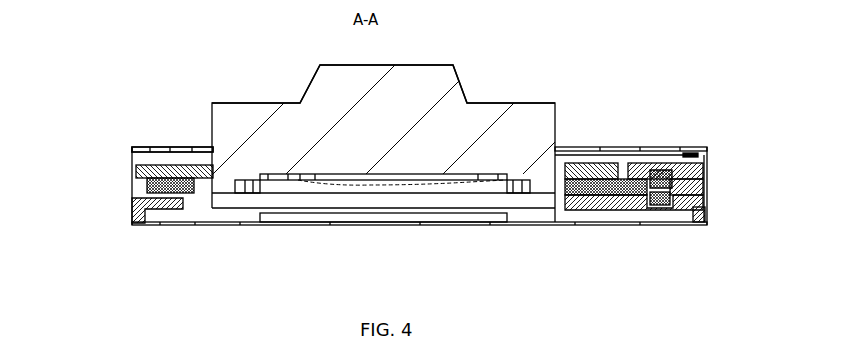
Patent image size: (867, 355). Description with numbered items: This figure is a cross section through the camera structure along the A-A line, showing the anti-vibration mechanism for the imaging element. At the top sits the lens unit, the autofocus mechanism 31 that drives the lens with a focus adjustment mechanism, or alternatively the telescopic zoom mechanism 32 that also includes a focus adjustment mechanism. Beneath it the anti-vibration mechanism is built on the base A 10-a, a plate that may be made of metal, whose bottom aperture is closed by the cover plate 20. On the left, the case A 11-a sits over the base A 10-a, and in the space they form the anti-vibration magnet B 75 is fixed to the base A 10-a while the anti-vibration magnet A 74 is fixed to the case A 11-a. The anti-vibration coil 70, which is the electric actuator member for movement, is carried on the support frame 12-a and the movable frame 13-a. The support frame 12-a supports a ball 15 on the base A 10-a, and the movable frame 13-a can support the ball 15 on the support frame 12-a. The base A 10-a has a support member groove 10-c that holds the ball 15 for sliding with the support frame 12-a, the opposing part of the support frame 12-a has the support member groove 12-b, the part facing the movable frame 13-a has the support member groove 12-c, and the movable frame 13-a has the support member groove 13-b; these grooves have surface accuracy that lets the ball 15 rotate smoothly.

The movable frame 13-a is at (130, 170).
The case A 11-a is at (133, 178).
The support frame 12-a is at (147, 189).
The base A 10-a is at (135, 214).
The autofocus mechanism 31 is at (383, 115).
The telescopic zoom mechanism 32 is at (290, 118).
The cover plate 20 is at (236, 223).
The anti-vibration magnet A 74 is at (583, 163).
The support member groove of the movable frame 13-b is at (660, 170).
The support member groove of the support frame 12-c is at (700, 170).
The support member groove of the support frame 12-b is at (703, 192).
The anti-vibration coil 70 is at (572, 209).
The anti-vibration magnet B 75 is at (583, 196).
The ball 15 is at (653, 206).
The support member groove 10-c is at (674, 212).